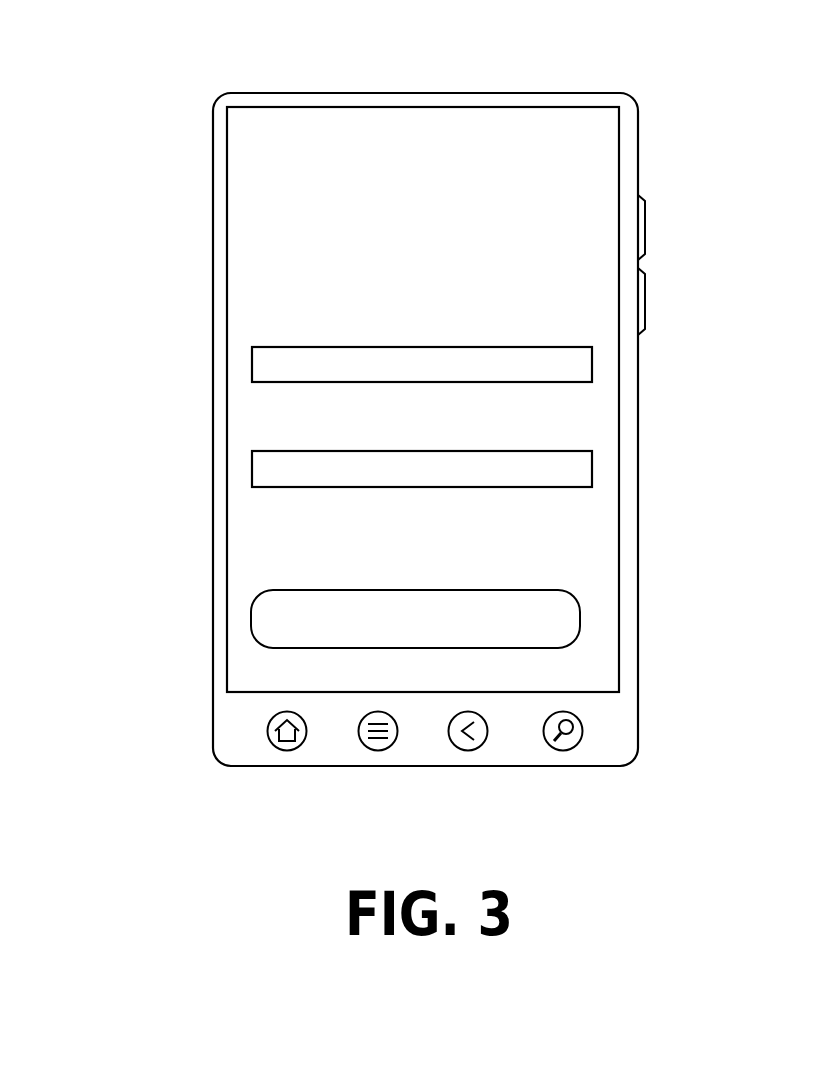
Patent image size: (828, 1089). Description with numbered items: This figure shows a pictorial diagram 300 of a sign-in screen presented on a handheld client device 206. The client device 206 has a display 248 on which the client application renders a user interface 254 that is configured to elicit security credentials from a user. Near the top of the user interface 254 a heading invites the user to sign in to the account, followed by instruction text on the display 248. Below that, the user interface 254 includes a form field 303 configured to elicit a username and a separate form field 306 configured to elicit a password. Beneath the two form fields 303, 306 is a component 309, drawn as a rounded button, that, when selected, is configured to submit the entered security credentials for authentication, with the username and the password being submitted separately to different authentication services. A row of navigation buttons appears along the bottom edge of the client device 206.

The sign-in screen of mobile device 300 is at (115, 787).
The user interface 254 is at (587, 130).
The display 248 is at (228, 262).
The form field 303 is at (265, 363).
The form field 306 is at (265, 469).
The component 309 is at (267, 618).
The client device 206 is at (235, 722).